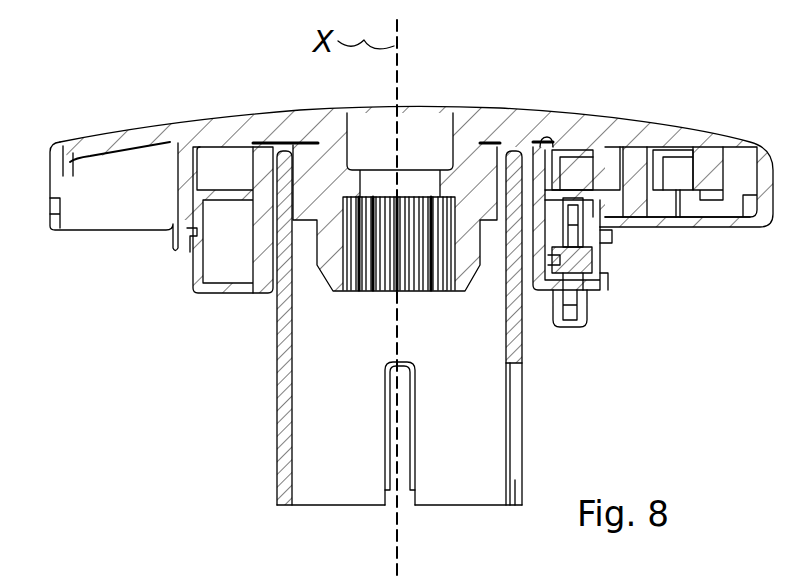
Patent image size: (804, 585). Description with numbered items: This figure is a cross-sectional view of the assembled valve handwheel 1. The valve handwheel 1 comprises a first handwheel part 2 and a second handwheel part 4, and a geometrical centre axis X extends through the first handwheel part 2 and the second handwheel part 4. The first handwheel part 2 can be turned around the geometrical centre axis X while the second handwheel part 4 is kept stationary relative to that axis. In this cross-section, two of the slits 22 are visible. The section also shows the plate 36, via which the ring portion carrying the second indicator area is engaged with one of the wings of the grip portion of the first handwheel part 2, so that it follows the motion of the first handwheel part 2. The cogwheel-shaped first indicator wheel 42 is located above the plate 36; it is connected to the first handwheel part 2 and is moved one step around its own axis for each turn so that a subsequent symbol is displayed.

The valve handwheel 1 is at (117, 54).
The first handwheel part 2 is at (233, 109).
The second handwheel part 4 is at (277, 332).
The slits 22 is at (392, 496).
The plate 36 is at (727, 219).
The first indicator wheel 42 is at (680, 193).